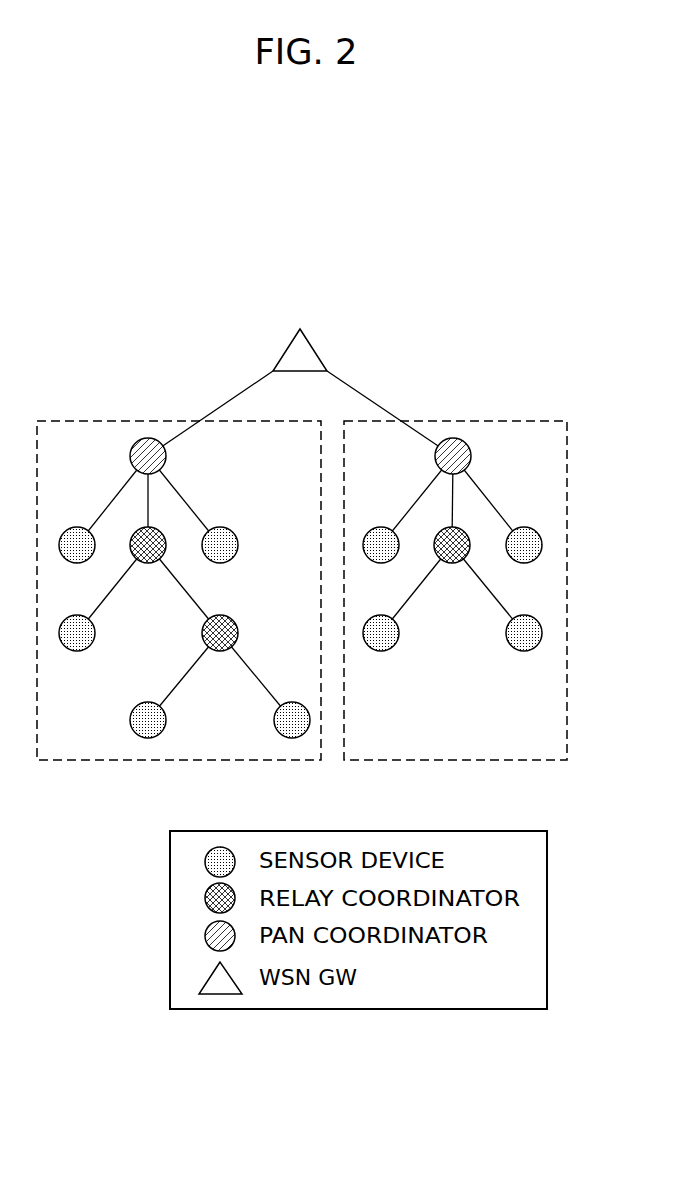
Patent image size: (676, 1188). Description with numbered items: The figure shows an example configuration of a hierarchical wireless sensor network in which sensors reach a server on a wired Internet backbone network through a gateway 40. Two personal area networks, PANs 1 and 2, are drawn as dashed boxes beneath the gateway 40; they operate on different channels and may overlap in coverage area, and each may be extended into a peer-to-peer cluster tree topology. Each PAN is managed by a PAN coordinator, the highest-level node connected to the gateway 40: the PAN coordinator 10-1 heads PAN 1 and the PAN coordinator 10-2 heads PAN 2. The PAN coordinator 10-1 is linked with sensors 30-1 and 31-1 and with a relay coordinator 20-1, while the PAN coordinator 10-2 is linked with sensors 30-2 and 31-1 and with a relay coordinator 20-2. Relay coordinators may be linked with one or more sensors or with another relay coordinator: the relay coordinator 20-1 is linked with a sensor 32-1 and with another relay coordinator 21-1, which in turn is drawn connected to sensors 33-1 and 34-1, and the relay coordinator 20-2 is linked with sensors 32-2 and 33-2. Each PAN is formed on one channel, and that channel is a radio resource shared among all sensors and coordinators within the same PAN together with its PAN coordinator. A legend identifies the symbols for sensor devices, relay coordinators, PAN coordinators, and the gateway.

The personal area network 1 is at (87, 421).
The personal area network 2 is at (497, 421).
The gateway 40 is at (312, 346).
The PAN coordinator 10-1 is at (166, 457).
The PAN coordinator 10-2 is at (471, 457).
The relay coordinator 20-1 is at (147, 564).
The relay coordinator 20-2 is at (452, 564).
The relay coordinator 21-1 is at (239, 634).
The sensor 30-1 is at (72, 527).
The sensor 30-2 is at (375, 527).
The sensor 31-1 is at (239, 546).
The sensor 32-1 is at (96, 634).
The sensor 32-2 is at (380, 651).
The sensor device 33-1 is at (129, 720).
The sensor 33-2 is at (523, 651).
The sensor device 34-1 is at (273, 720).